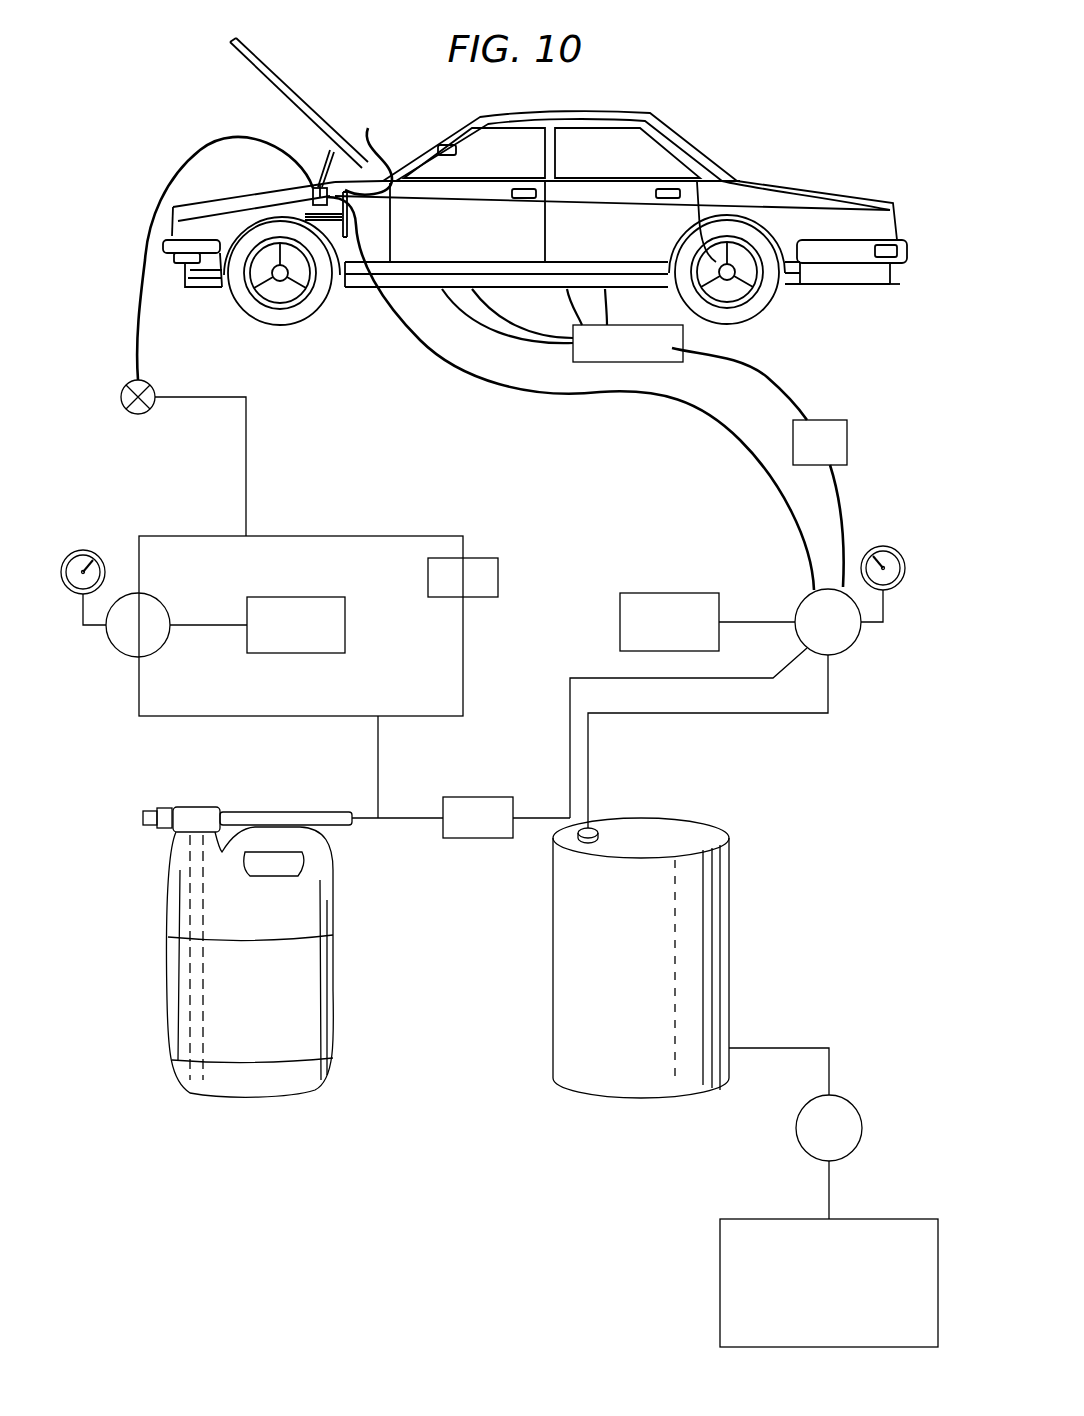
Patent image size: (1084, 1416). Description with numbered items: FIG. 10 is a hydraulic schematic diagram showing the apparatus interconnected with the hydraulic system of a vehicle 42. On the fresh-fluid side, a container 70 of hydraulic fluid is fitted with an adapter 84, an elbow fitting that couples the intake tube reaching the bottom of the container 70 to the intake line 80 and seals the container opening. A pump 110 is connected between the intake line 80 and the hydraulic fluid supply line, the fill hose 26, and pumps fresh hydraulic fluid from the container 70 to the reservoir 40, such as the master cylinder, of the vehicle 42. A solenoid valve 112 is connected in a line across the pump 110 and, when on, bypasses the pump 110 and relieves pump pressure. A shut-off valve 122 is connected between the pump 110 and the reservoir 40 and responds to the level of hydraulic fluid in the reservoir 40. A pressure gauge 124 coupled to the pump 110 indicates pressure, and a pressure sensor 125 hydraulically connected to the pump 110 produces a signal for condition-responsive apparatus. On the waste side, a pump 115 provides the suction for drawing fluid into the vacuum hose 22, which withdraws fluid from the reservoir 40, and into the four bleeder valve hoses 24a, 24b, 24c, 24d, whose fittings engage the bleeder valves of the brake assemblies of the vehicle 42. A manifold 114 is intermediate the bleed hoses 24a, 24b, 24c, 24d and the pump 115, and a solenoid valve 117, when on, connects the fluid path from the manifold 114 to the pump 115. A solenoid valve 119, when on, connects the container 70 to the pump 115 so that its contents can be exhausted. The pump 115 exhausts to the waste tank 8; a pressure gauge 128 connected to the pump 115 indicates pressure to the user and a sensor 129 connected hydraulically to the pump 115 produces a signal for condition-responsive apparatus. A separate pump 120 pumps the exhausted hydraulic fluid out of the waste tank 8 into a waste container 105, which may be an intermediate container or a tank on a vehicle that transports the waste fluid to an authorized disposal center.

The vehicle 42 is at (763, 127).
The reservoir 40 is at (368, 146).
The fill hose 26 is at (150, 174).
The vacuum hose 22 is at (547, 394).
The bleeder valve hose 24a is at (451, 306).
The bleeder valve hose 24b is at (494, 325).
The bleeder valve hose 24c is at (567, 300).
The bleeder valve hose 24d is at (605, 304).
The manifold 114 is at (690, 341).
The solenoid valve 117 is at (825, 428).
The pressure gauge 128 is at (884, 546).
The pump 115 is at (845, 641).
The sensor 129 is at (620, 620).
The shut-off valve 122 is at (121, 397).
The pressure gauge 124 is at (90, 550).
The pump 110 is at (155, 647).
The pressure sensor 125 is at (345, 605).
The solenoid valve 112 is at (475, 575).
The solenoid valve 119 is at (477, 817).
The adapter 84 is at (167, 808).
The intake line 80 is at (267, 812).
The container 70 is at (327, 1008).
The waste tank 8 is at (553, 945).
The pump 120 is at (862, 1128).
The waste container 105 is at (720, 1280).